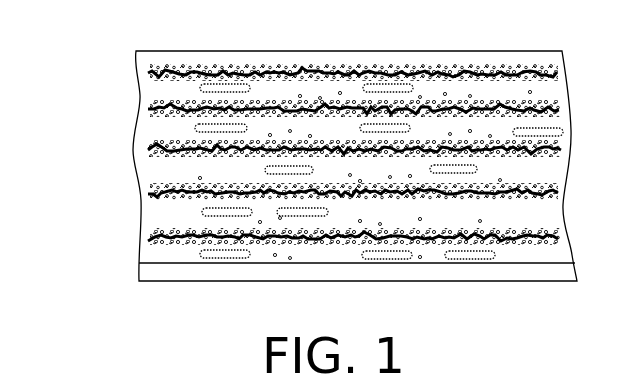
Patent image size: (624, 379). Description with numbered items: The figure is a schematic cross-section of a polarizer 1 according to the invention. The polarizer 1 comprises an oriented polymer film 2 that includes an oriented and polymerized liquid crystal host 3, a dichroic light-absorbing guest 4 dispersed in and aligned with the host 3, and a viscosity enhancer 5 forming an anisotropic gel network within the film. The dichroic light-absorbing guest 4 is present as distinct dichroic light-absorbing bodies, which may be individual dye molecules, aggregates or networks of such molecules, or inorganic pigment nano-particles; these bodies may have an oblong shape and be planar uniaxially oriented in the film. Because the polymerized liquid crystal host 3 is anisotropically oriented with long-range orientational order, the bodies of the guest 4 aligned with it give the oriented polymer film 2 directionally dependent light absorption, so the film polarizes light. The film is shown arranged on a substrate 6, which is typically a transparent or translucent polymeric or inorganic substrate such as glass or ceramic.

The polarizer 1 is at (90, 189).
The oriented polymer film 2 is at (137, 130).
The oriented and polymerized liquid crystal host 3 is at (266, 72).
The dichroic light-absorbing guest 4 is at (385, 84).
The viscosity enhancer 5 is at (434, 70).
The substrate 6 is at (138, 269).